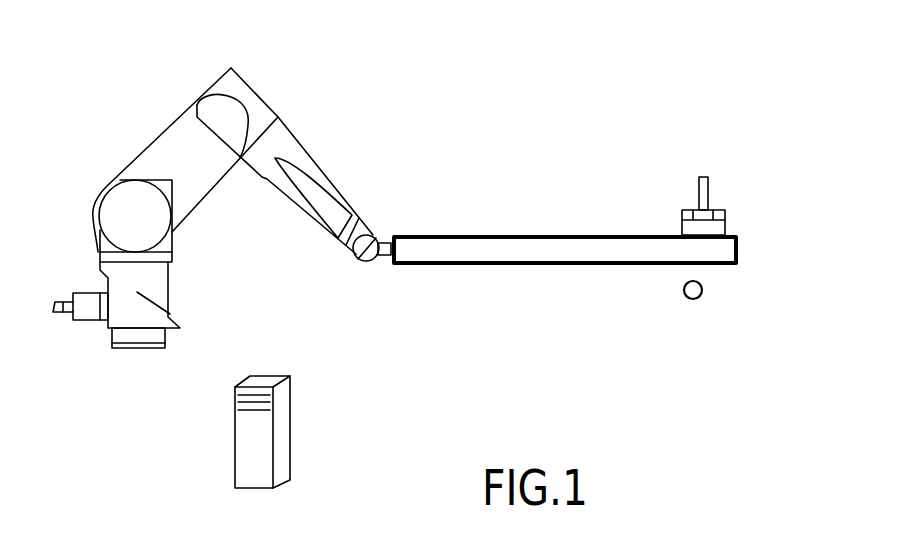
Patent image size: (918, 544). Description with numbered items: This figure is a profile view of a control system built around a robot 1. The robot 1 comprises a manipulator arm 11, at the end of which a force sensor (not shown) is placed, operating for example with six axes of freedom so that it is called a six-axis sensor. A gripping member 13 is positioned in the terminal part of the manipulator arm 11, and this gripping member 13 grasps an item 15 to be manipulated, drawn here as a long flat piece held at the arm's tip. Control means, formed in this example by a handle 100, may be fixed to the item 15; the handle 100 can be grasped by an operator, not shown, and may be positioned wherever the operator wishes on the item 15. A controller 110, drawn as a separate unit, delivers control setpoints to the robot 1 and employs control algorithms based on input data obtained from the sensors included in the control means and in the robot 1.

The robot 1 is at (225, 180).
The manipulator arm 11 is at (280, 140).
The gripping member 13 is at (385, 237).
The item 15 is at (532, 250).
The handle 100 is at (715, 197).
The controller 110 is at (297, 395).